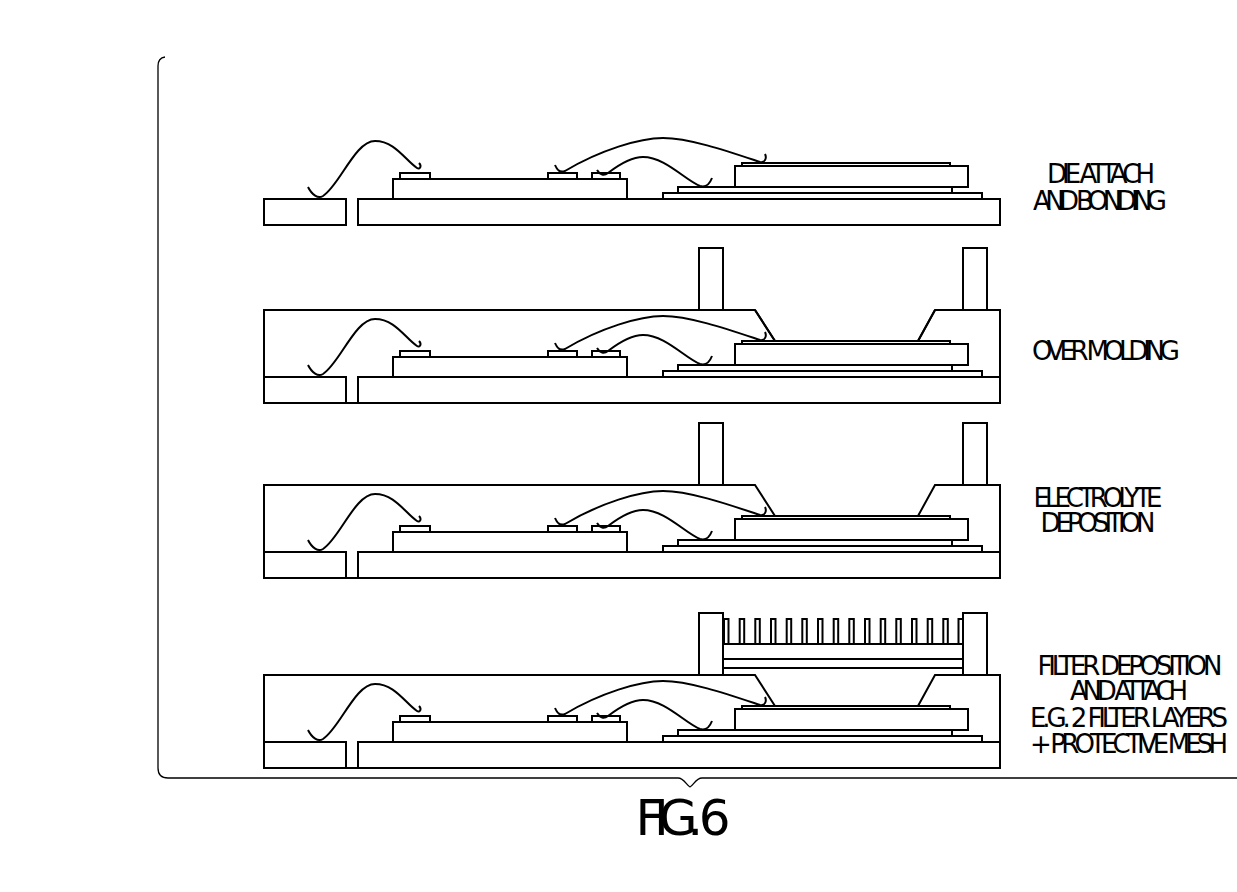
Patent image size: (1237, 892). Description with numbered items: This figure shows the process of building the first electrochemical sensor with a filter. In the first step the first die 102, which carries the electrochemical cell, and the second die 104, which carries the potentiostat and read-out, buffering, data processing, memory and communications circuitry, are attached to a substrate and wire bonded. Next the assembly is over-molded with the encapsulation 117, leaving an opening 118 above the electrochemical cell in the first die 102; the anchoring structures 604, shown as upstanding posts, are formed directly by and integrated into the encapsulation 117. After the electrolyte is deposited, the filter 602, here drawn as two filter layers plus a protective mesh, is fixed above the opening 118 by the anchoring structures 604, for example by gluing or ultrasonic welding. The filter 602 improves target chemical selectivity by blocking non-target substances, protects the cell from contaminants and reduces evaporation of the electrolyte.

The first die 102 is at (876, 139).
The second die 104 is at (511, 146).
The encapsulation 117 is at (280, 330).
The opening 118 is at (818, 323).
The filter 602 is at (735, 666).
The anchoring structures 604 is at (707, 278).